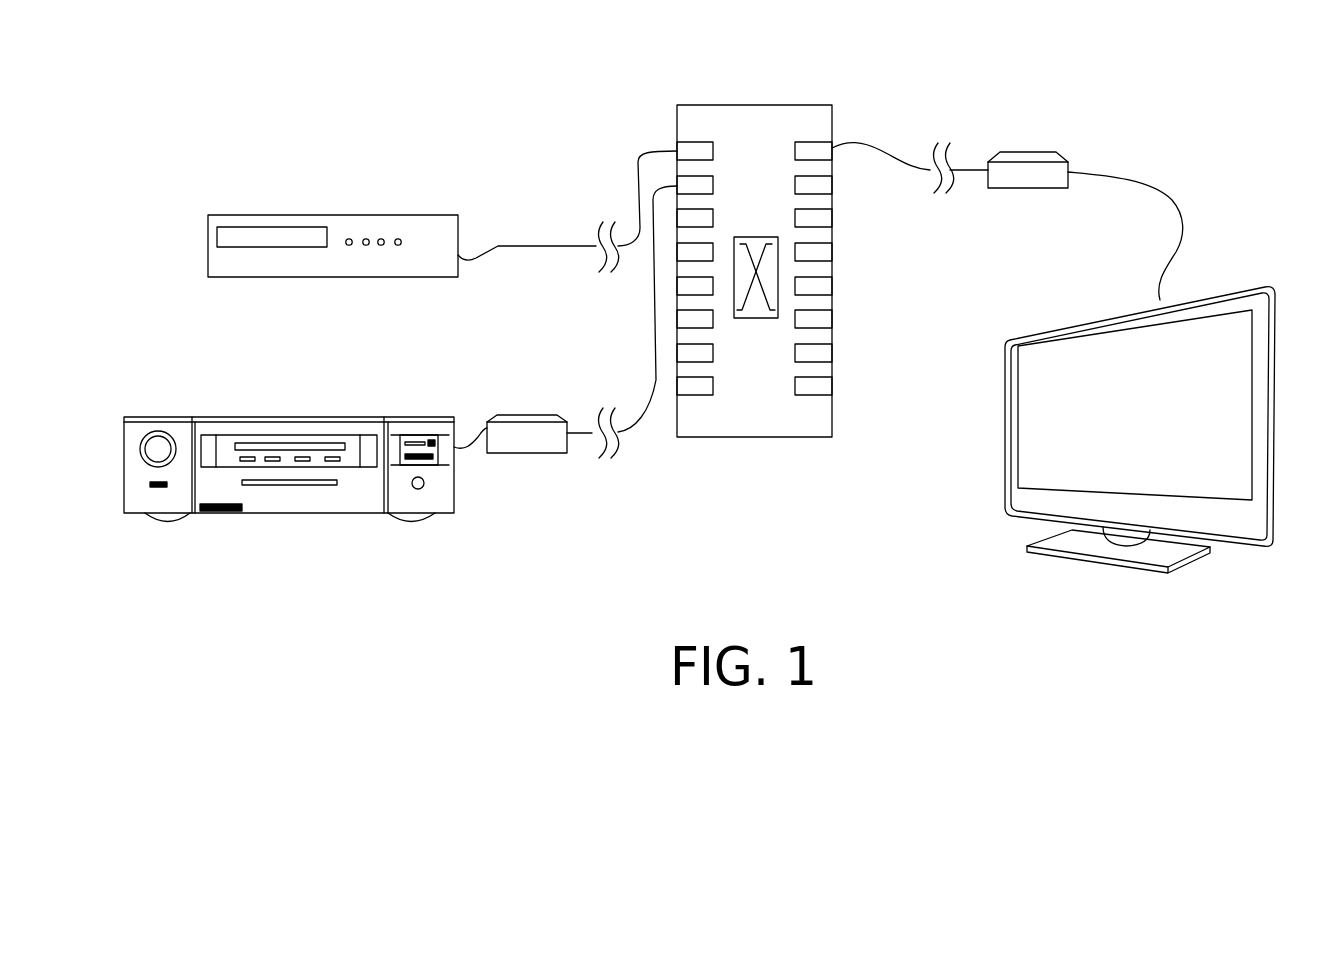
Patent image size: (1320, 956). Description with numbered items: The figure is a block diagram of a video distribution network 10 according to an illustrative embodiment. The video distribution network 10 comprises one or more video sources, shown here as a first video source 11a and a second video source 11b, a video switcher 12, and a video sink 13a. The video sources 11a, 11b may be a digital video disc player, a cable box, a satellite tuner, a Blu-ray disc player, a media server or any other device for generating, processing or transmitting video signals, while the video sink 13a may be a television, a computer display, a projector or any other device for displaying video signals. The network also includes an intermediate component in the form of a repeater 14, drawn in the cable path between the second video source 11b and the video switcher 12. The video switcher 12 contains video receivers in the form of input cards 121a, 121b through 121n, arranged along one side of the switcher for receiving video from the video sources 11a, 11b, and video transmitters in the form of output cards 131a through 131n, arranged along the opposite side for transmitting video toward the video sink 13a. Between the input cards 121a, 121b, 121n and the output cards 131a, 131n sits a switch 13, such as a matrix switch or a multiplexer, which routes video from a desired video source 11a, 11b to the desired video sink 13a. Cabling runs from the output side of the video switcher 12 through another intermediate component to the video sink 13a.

The video distribution network 10 is at (268, 75).
The video source 11a is at (388, 216).
The video source 11b is at (338, 418).
The video switcher 12 is at (754, 254).
The input card 121a is at (713, 152).
The input card 121b is at (712, 188).
The input card 121n is at (728, 398).
The output card 131a is at (796, 149).
The output card 131n is at (796, 383).
The switch 13 is at (755, 320).
The video sink 13a is at (1045, 333).
The repeater 14 is at (505, 414).